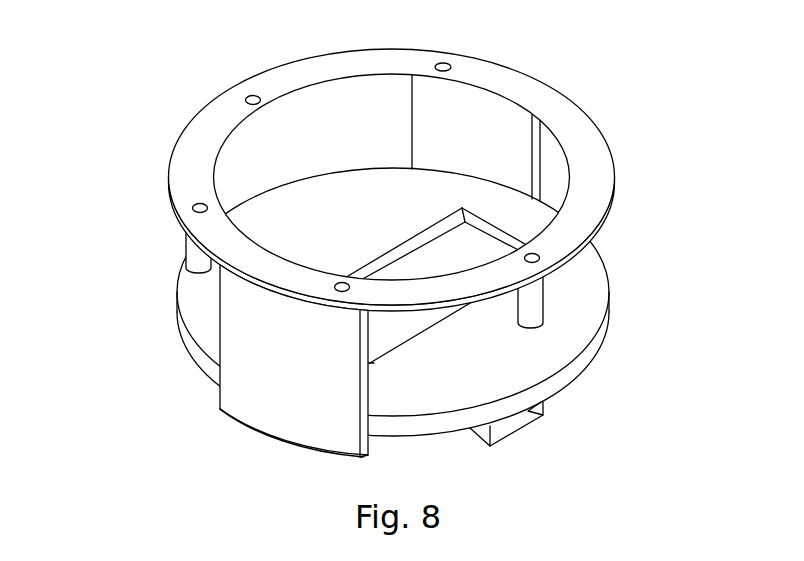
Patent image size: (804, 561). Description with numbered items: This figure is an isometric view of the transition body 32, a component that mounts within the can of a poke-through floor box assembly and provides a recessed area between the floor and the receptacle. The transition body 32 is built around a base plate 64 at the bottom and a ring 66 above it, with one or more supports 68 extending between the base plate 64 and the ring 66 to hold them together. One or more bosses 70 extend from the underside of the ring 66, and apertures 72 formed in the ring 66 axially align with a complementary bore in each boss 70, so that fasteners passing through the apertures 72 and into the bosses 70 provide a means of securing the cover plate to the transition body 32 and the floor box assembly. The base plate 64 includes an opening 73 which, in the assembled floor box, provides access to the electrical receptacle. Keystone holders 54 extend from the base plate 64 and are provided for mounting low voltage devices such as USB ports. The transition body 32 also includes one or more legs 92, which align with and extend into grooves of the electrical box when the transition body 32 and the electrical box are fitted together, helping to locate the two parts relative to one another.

The transition body 32 is at (374, 243).
The keystone holder 54 is at (515, 430).
The base plate 64 is at (555, 380).
The ring 66 is at (437, 176).
The support 68 is at (306, 382).
The boss 70 is at (541, 297).
The aperture 72 is at (536, 255).
The opening 73 is at (480, 266).
The leg 92 is at (272, 440).